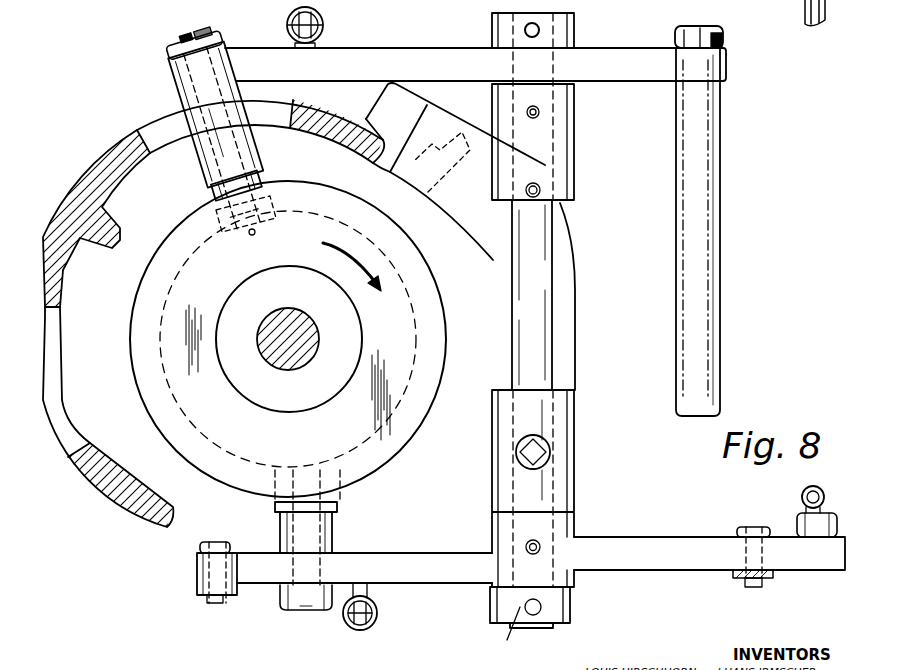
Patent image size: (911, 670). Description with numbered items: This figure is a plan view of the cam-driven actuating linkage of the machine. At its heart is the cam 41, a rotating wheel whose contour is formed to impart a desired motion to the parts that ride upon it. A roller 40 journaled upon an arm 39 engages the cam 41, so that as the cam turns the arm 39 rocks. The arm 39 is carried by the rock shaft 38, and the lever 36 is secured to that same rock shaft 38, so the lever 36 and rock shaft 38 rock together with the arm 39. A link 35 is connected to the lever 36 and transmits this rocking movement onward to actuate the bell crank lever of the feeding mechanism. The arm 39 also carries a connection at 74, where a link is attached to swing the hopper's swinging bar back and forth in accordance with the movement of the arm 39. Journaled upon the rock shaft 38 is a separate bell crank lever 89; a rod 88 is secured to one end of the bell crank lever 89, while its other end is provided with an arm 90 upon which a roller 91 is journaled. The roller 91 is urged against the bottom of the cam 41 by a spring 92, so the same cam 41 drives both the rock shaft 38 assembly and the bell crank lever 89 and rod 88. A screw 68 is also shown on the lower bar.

The link 35 is at (747, 580).
The lever 36 is at (675, 563).
The rock shaft 38 is at (540, 317).
The arm 39 is at (440, 572).
The roller 40 is at (340, 503).
The cam 41 is at (397, 433).
The screw 68 is at (360, 630).
The connection point 74 is at (213, 603).
The rod 88 is at (702, 362).
The bell crank lever 89 is at (578, 60).
The arm 90 is at (220, 140).
The roller 91 is at (213, 190).
The spring 92 is at (323, 23).